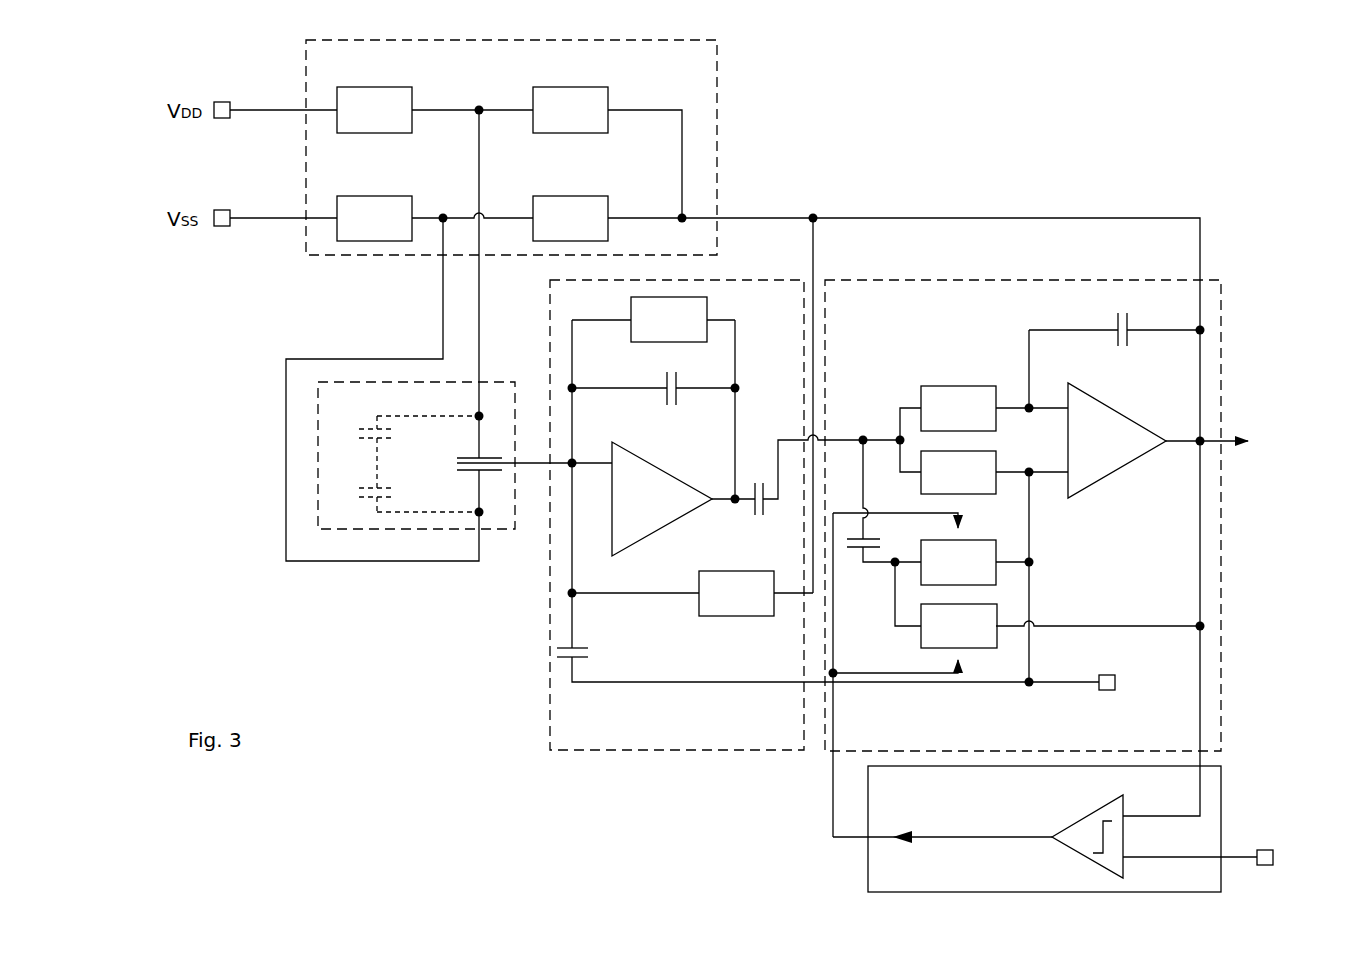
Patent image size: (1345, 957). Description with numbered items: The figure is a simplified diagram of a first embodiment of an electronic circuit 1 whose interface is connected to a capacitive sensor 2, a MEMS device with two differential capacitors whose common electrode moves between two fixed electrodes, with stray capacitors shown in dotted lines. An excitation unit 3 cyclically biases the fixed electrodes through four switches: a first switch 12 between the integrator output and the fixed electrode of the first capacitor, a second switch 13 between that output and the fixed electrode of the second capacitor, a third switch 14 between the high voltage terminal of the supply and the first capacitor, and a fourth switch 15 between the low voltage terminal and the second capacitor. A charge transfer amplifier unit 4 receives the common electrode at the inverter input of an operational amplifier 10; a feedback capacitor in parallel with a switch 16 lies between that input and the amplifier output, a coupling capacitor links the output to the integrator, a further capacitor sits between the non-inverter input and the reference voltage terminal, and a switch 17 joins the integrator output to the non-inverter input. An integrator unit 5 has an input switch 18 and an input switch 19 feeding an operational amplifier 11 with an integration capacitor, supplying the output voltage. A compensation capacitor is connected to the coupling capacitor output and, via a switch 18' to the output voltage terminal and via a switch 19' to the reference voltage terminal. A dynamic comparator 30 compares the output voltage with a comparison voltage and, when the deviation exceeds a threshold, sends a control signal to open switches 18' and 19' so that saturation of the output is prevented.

The electronic circuit 1 is at (1013, 176).
The capacitive sensor 2 is at (446, 529).
The excitation unit 3 is at (712, 60).
The charge transfer amplifier unit 4 is at (763, 282).
The integrator unit 5 is at (1122, 285).
The operational amplifier 10 is at (662, 515).
The operational amplifier 11 is at (1135, 447).
The first switch 12 is at (593, 95).
The second switch 13 is at (593, 203).
The third switch 14 is at (344, 98).
The fourth switch 15 is at (380, 236).
The switch 16 is at (698, 315).
The switch 17 is at (747, 608).
The input switch 18 is at (969, 491).
The input switch 19 is at (958, 388).
The switch 18' is at (1001, 635).
The switch 19' is at (1001, 571).
The dynamic comparator 30 is at (1213, 880).